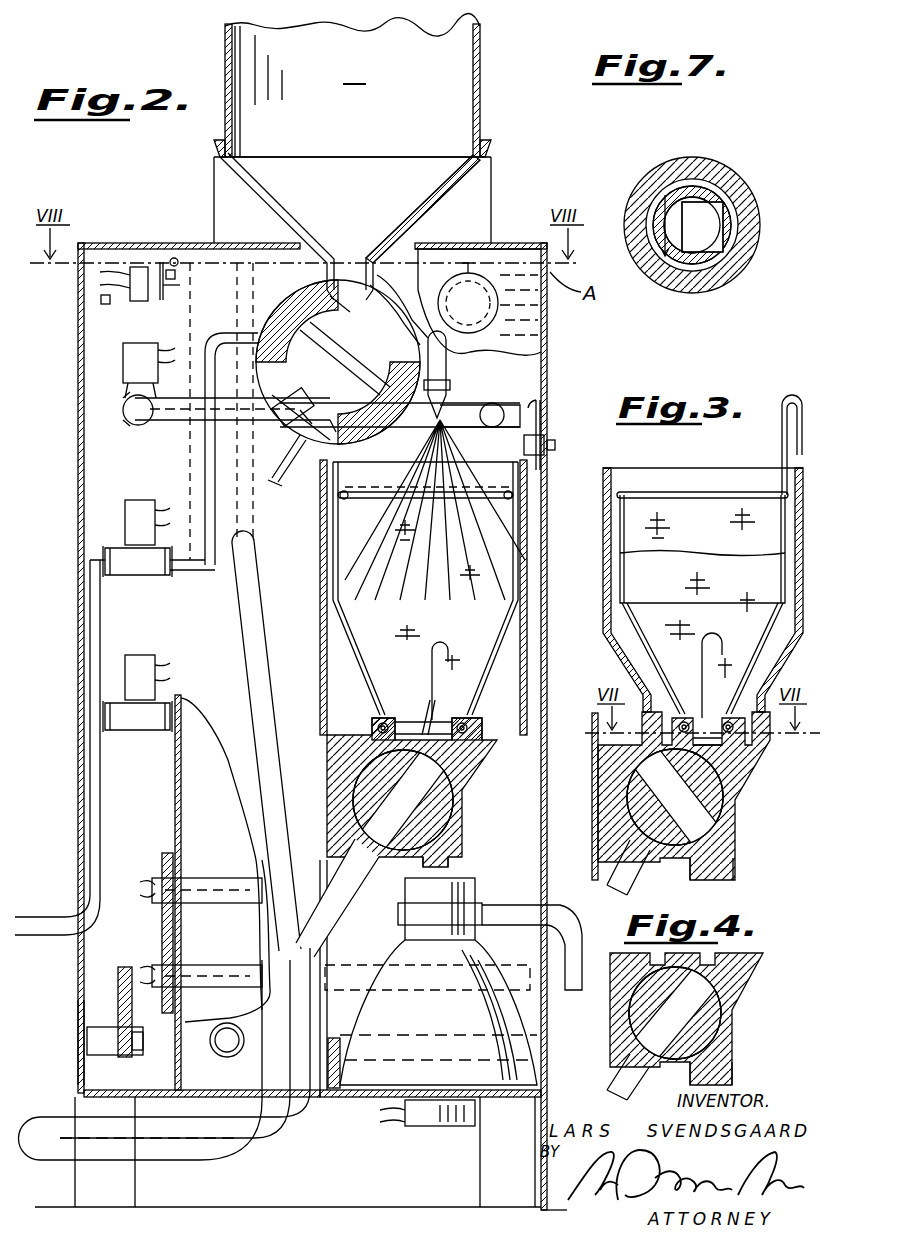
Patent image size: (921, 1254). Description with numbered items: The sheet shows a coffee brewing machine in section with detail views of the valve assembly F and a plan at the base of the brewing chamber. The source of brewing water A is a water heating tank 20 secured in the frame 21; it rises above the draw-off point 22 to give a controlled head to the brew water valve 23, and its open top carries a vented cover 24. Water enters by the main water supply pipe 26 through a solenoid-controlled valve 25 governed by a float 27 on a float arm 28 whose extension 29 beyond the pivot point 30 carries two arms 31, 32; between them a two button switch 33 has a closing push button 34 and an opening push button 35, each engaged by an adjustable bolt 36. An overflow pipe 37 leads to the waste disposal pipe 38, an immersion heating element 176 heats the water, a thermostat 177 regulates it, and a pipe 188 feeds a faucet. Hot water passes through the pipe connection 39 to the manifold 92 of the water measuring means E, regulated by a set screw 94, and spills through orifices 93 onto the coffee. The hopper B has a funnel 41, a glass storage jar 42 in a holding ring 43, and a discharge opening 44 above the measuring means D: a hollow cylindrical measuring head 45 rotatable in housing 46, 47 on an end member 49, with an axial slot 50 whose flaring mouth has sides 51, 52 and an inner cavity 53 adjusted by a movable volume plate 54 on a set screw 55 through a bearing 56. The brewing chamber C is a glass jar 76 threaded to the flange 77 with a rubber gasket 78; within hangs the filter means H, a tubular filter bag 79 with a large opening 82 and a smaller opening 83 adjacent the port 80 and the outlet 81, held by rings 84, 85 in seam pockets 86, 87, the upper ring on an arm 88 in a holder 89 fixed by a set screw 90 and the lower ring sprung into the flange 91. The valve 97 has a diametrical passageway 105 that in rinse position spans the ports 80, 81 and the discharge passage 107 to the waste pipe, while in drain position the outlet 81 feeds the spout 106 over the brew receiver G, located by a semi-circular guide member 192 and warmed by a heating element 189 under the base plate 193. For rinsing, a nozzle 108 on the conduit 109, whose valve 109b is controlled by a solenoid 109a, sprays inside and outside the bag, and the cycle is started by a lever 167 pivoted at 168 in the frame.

In FIG. 2, the water heating tank 20 is at (547, 340).
In FIG. 2, the frame 21 is at (328, 1105).
In FIG. 2, the draw-off point 22 is at (128, 424).
In FIG. 2, the brew water valve 23 is at (120, 402).
In FIG. 2, the vented cover 24 is at (503, 243).
In FIG. 2, the solenoid-controlled valve 25 is at (142, 730).
In FIG. 2, the main water supply pipe 26 is at (42, 915).
In FIG. 2, the float 27 is at (480, 285).
In FIG. 2, the float arm 28 is at (447, 262).
In FIG. 2, the extension 29 is at (135, 262).
In FIG. 2, the pivot point 30 is at (182, 262).
In FIG. 2, the arm 31 is at (112, 300).
In FIG. 2, the arm 32 is at (180, 290).
In FIG. 2, the two button switch 33 is at (140, 305).
In FIG. 2, the push button 34 is at (165, 268).
In FIG. 2, the push button 35 is at (130, 300).
In FIG. 2, the adjustable bolt 36 is at (176, 274).
In FIG. 2, the overflow pipe 37 is at (248, 318).
In FIG. 2, the waste disposal pipe 38 is at (175, 1160).
In FIG. 2, the pipe connection 39 is at (160, 420).
In FIG. 2, the funnel 41 is at (270, 203).
In FIG. 2, the glass storage jar 42 is at (480, 106).
In FIG. 2, the holding ring 43 is at (488, 156).
In FIG. 2, the discharge opening 44 is at (366, 262).
In FIG. 2, the hollow cylindrical measuring head 45 is at (447, 356).
In FIG. 2, the housing 46 is at (418, 320).
In FIG. 2, the housing 47 is at (312, 300).
In FIG. 2, the end member 49 is at (325, 300).
In FIG. 2, the slot 50 is at (410, 362).
In FIG. 2, the side 51 is at (405, 325).
In FIG. 2, the side 52 is at (300, 296).
In FIG. 2, the inner cavity 53 is at (340, 387).
In FIG. 2, the movable volume plate 54 is at (296, 448).
In FIG. 2, the set screw 55 is at (284, 468).
In FIG. 2, the bearing 56 is at (280, 428).
In FIG. 2, the glass jar 76 is at (320, 538).
In FIG. 7, the glass jar 76 is at (742, 195).
In FIG. 3, the glass jar 76 is at (603, 554).
In FIG. 2, the flange 77 is at (497, 738).
In FIG. 7, the flange 77 is at (730, 175).
In FIG. 3, the flange 77 is at (770, 722).
In FIG. 2, the rubber gasket 78 is at (492, 756).
In FIG. 3, the rubber gasket 78 is at (646, 712).
In FIG. 2, the filter bag 79 is at (500, 640).
In FIG. 3, the filter bag 79 is at (712, 529).
In FIG. 2, the port 80 is at (428, 712).
In FIG. 7, the port 80 is at (712, 243).
In FIG. 3, the port 80 is at (710, 745).
In FIG. 4, the port 80 is at (710, 962).
In FIG. 2, the outlet 81 is at (372, 728).
In FIG. 7, the outlet 81 is at (660, 236).
In FIG. 3, the outlet 81 is at (650, 745).
In FIG. 4, the outlet 81 is at (650, 944).
In FIG. 2, the large opening 82 is at (520, 488).
In FIG. 3, the large opening 82 is at (712, 490).
In FIG. 2, the smaller opening 83 is at (452, 718).
In FIG. 2, the upper ring 84 is at (514, 496).
In FIG. 3, the upper ring 84 is at (650, 492).
In FIG. 2, the lower ring 85 is at (430, 658).
In FIG. 3, the lower ring 85 is at (700, 657).
In FIG. 2, the seam pocket 86 is at (392, 500).
In FIG. 2, the seam pocket 87 is at (432, 748).
In FIG. 2, the arm 88 is at (543, 410).
In FIG. 3, the arm 88 is at (782, 432).
In FIG. 2, the holder 89 is at (545, 436).
In FIG. 2, the set screw 90 is at (555, 445).
In FIG. 2, the flange 91 is at (470, 724).
In FIG. 7, the flange 91 is at (728, 220).
In FIG. 3, the flange 91 is at (735, 722).
In FIG. 2, the manifold 92 is at (490, 402).
In FIG. 2, the orifices 93 is at (468, 430).
In FIG. 2, the adjustable set screw 94 is at (545, 405).
In FIG. 2, the valve 97 is at (445, 810).
In FIG. 3, the valve 97 is at (722, 805).
In FIG. 4, the valve 97 is at (722, 1010).
In FIG. 2, the diametrical passageway 105 is at (421, 816).
In FIG. 3, the diametrical passageway 105 is at (692, 806).
In FIG. 4, the diametrical passageway 105 is at (692, 1022).
In FIG. 2, the outlet 106 is at (448, 868).
In FIG. 3, the outlet 106 is at (712, 870).
In FIG. 4, the outlet 106 is at (712, 1072).
In FIG. 2, the discharge passage 107 is at (380, 858).
In FIG. 3, the discharge passage 107 is at (620, 880).
In FIG. 4, the discharge passage 107 is at (622, 1062).
In FIG. 2, the nozzle 108 is at (340, 434).
In FIG. 2, the conduit 109 is at (204, 468).
In FIG. 2, the solenoid 109a is at (124, 518).
In FIG. 2, the valve 109b is at (138, 575).
In FIG. 2, the lever 167 is at (118, 970).
In FIG. 2, the pivot 168 is at (112, 1056).
In FIG. 2, the electrical immersion heating element 176 is at (202, 968).
In FIG. 2, the thermostat 177 is at (200, 900).
In FIG. 2, the pipe 188 is at (218, 1056).
In FIG. 2, the electric heating element 189 is at (432, 1122).
In FIG. 2, the semi-circular guide member 192 is at (334, 1038).
In FIG. 2, the base plate 193 is at (424, 1088).
In FIG. 2, the source of brewing water A is at (214, 810).
In FIG. 2, the hopper B is at (354, 71).
In FIG. 2, the brewing chamber C is at (536, 524).
In FIG. 3, the brewing chamber C is at (594, 608).
In FIG. 2, the measuring means D is at (272, 296).
In FIG. 2, the brew water measuring means E is at (505, 392).
In FIG. 2, the three position valve F is at (486, 776).
In FIG. 7, the three position valve F is at (662, 285).
In FIG. 3, the three position valve F is at (758, 790).
In FIG. 4, the three position valve F is at (756, 998).
In FIG. 2, the brew receiver G is at (432, 1028).
In FIG. 2, the filter means H is at (455, 568).
In FIG. 3, the filter means H is at (782, 560).